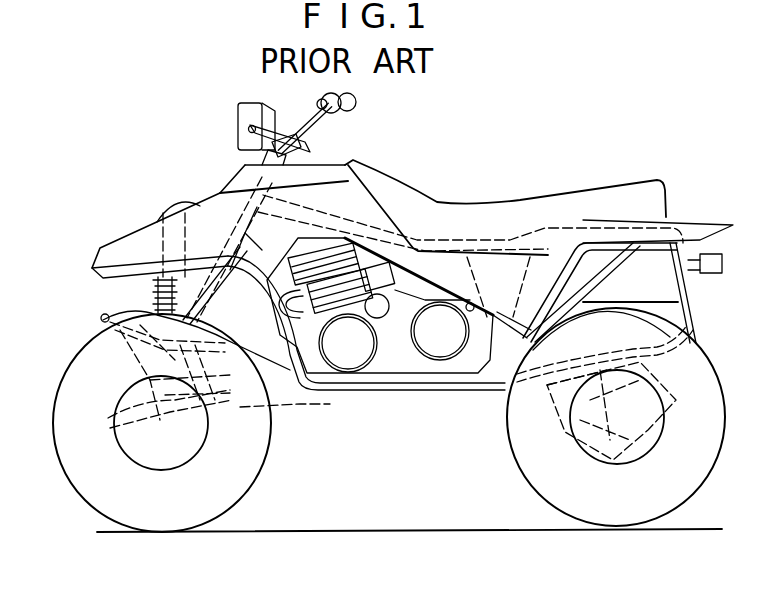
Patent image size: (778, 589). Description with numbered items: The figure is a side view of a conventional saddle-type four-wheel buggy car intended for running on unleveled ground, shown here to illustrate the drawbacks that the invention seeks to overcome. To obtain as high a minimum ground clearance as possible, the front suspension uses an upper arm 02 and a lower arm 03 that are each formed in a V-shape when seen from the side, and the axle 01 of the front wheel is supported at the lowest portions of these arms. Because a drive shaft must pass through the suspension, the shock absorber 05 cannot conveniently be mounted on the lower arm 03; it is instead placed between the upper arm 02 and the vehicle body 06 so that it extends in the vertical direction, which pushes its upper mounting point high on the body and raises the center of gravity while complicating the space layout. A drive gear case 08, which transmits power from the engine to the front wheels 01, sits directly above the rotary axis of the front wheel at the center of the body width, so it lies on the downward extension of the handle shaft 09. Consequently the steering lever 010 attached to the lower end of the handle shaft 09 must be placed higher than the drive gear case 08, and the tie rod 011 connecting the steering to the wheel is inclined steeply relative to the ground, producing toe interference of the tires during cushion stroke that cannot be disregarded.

The axle 01 is at (247, 470).
The upper arm 02 is at (101, 318).
The lower arm 03 is at (108, 418).
The shock absorber 05 is at (153, 297).
The vehicle body 06 is at (450, 213).
The drive gear case 08 is at (105, 382).
The handle shaft 09 is at (203, 302).
The steering lever 010 is at (260, 377).
The tie rod 011 is at (240, 407).